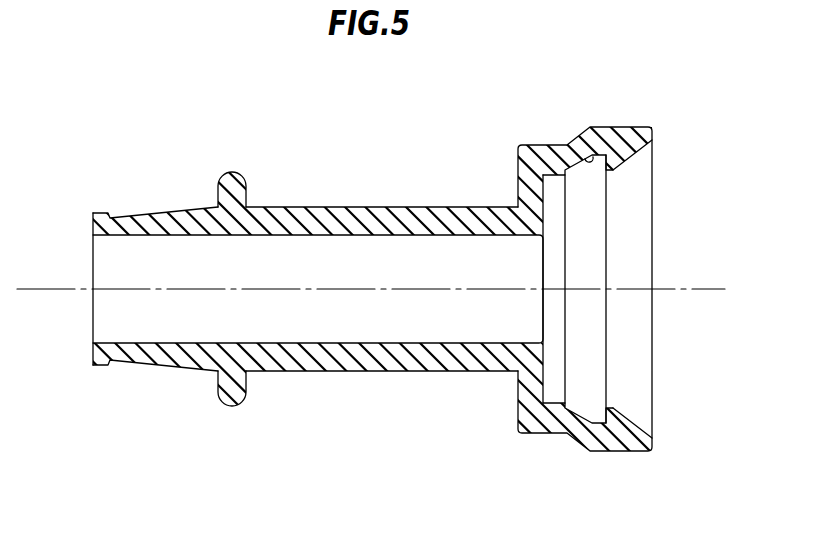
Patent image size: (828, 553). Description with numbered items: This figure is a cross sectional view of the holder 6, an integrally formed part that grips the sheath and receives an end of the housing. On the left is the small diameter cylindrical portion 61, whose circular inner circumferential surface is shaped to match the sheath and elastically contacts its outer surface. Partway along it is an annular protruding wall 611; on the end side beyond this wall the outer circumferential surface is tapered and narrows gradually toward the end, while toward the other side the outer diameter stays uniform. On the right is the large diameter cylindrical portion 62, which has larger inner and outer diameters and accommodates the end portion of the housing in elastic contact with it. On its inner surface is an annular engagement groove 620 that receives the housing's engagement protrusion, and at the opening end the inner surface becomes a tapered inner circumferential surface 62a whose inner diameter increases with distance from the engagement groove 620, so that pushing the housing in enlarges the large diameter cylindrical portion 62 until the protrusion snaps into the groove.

The holder 6 is at (660, 98).
The small diameter cylindrical portion 61 is at (395, 207).
The annular protruding wall 611 is at (225, 173).
The large diameter cylindrical portion 62 is at (618, 127).
The annular engagement groove 620 is at (577, 162).
The tapered inner circumferential surface 62a is at (640, 153).